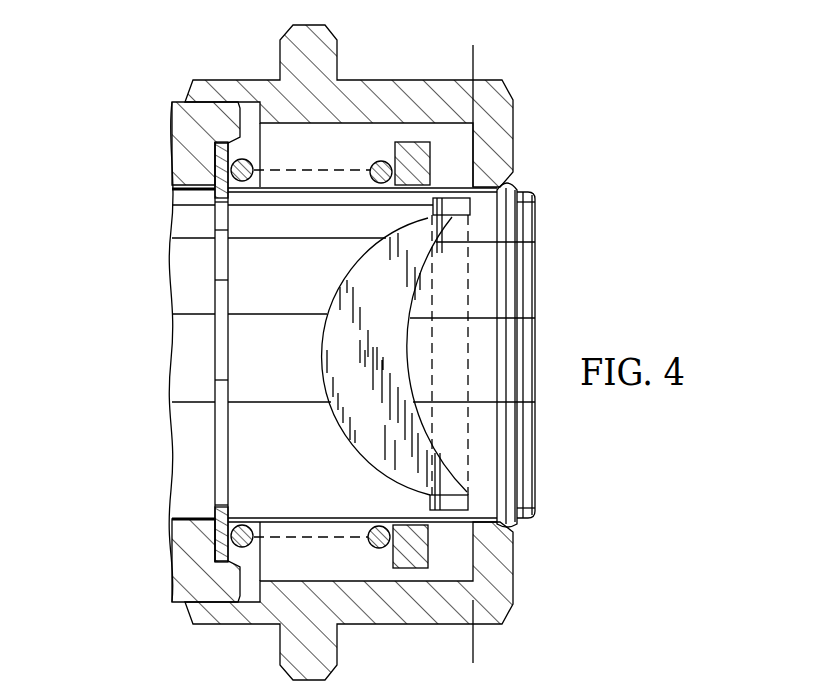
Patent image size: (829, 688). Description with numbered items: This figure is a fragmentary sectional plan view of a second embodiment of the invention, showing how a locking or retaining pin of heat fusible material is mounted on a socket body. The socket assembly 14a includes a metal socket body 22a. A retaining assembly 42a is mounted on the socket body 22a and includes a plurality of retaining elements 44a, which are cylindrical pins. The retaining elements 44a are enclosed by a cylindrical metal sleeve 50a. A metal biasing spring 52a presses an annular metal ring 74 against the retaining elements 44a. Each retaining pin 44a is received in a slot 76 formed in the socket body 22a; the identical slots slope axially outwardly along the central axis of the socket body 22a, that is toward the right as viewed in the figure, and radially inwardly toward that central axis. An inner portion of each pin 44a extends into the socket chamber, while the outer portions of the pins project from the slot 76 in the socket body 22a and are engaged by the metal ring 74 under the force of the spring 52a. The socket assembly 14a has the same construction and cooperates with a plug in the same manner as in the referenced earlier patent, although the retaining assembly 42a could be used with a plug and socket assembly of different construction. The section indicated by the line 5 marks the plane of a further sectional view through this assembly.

The socket assembly 14a is at (517, 70).
The retaining assembly 42a is at (281, 33).
The socket body 22a is at (190, 362).
The cylindrical metal sleeve 50a is at (492, 578).
The metal biasing spring 52a is at (373, 540).
The annular metal ring 74 is at (413, 147).
The retaining elements 44a is at (447, 215).
The slot 76 is at (383, 332).
The section line 5- 5 is at (473, 45).